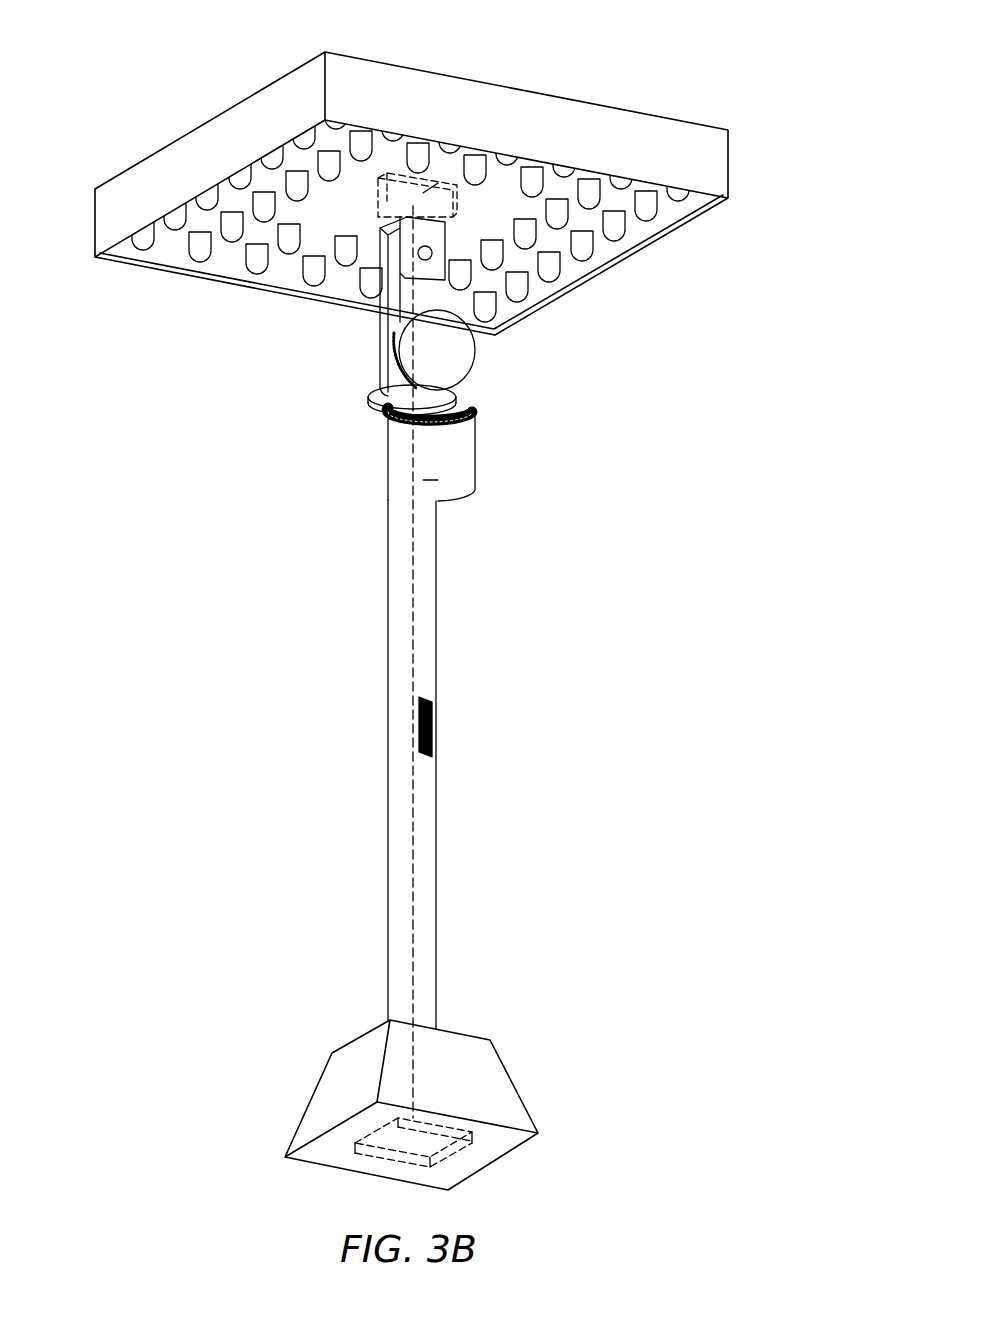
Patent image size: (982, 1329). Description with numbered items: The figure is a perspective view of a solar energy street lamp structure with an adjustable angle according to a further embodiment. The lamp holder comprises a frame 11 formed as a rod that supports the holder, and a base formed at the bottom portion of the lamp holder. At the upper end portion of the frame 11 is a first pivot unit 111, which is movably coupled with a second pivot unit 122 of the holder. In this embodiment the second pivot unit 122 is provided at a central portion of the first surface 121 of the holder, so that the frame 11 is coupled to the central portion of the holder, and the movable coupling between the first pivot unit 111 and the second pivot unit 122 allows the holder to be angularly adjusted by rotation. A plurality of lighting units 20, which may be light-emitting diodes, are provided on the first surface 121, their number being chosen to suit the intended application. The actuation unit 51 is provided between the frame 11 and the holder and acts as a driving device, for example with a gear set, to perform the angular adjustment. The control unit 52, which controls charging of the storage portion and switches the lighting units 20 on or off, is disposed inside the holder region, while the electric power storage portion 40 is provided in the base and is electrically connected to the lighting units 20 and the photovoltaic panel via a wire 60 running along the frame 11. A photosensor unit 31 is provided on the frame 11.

The frame 11 is at (413, 867).
The first pivot unit 111 is at (475, 1070).
The first surface 121 is at (290, 270).
The second pivot unit 122 is at (437, 240).
The lighting unit 20 is at (200, 253).
The photosensor unit 31 is at (433, 732).
The electric power storage portion 40 is at (457, 1147).
The actuation unit 51 is at (457, 365).
The control unit 52 is at (438, 187).
The wire 60 is at (412, 456).